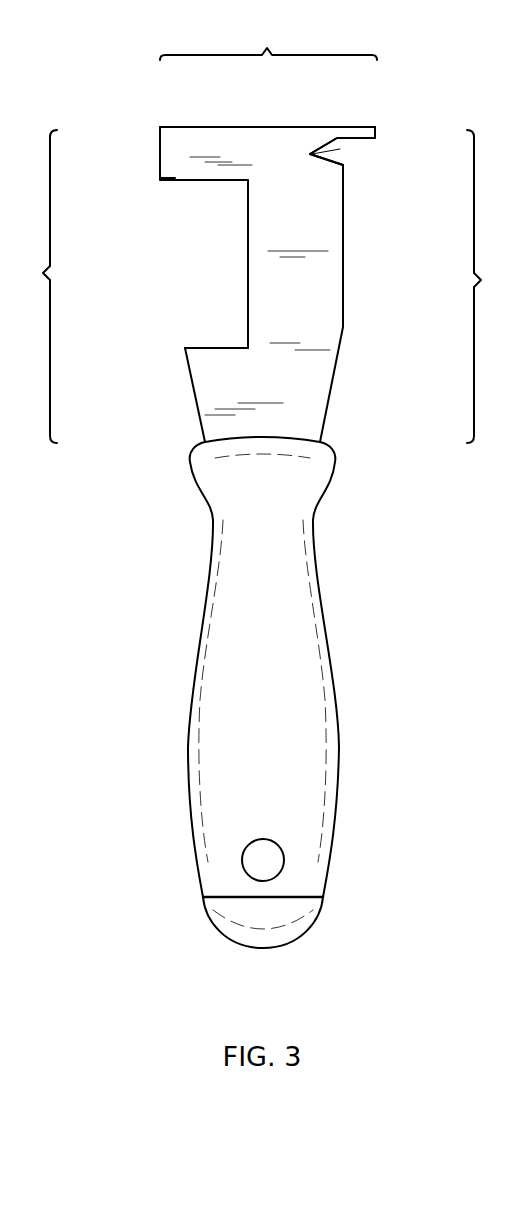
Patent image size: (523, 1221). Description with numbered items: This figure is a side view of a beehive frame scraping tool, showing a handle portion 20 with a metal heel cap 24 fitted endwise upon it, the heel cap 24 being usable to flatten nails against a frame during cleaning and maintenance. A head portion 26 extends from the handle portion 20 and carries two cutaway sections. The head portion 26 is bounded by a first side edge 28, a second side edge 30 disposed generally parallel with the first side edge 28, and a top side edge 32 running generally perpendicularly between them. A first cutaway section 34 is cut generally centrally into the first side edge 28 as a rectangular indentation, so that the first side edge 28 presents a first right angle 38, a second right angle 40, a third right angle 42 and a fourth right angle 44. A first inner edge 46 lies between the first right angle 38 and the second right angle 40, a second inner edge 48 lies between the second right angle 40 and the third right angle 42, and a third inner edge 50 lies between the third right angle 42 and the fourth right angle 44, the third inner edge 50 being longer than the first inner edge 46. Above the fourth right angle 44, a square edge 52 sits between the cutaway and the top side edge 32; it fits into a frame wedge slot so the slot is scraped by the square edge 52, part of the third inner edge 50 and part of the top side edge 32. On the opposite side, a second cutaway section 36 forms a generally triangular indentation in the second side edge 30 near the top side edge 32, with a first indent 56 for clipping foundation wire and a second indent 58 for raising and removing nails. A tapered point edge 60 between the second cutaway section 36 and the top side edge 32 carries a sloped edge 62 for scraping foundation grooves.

The handle portion 20 is at (303, 751).
The metal heel cap 24 is at (303, 908).
The head portion 26 is at (278, 393).
The first side edge 28 is at (32, 286).
The second side edge 30 is at (491, 286).
The top side edge 32 is at (268, 37).
The first cutaway section 34 is at (197, 281).
The second cutaway section 36 is at (352, 160).
The first right angle 38 is at (185, 348).
The second right angle 40 is at (248, 340).
The third right angle 42 is at (248, 186).
The fourth right angle 44 is at (160, 181).
The first inner edge 46 is at (215, 348).
The second inner edge 48 is at (248, 262).
The third inner edge 50 is at (198, 181).
The square edge 52 is at (160, 152).
The first indent 56 is at (340, 151).
The second indent 58 is at (344, 168).
The point edge 60 is at (375, 129).
The sloped edge 62 is at (376, 138).